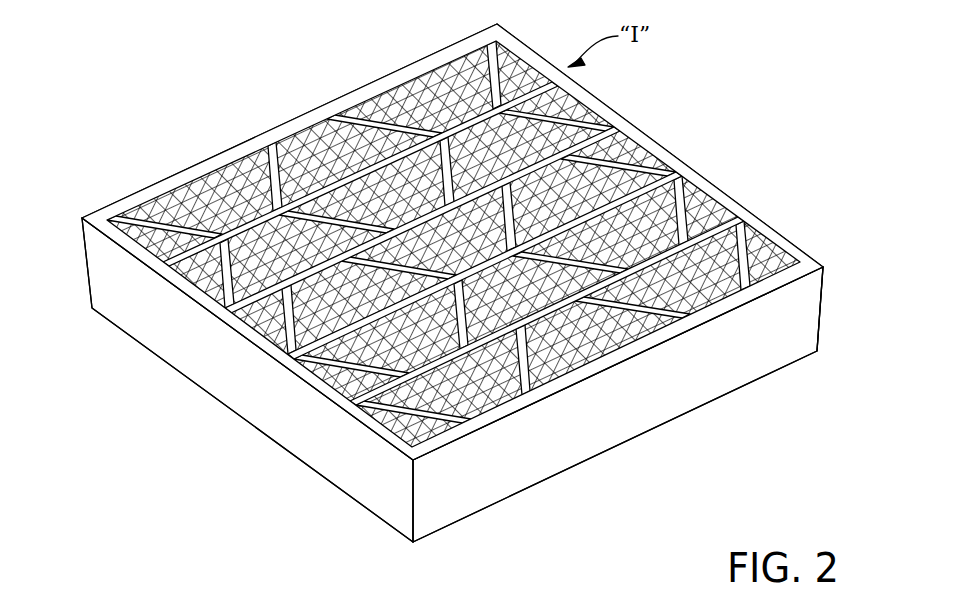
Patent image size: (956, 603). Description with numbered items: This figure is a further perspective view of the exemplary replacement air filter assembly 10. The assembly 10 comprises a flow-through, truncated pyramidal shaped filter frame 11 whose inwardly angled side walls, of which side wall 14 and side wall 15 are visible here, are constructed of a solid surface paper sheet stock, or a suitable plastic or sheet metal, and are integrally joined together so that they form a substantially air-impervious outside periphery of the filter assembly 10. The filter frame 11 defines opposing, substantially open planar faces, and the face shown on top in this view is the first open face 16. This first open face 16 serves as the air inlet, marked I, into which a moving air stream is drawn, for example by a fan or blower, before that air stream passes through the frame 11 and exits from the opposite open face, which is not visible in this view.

The air filter assembly 10 is at (125, 153).
The filter frame 11 is at (788, 238).
The side wall 14 is at (216, 372).
The side wall 15 is at (665, 405).
The first open face 16 is at (702, 164).